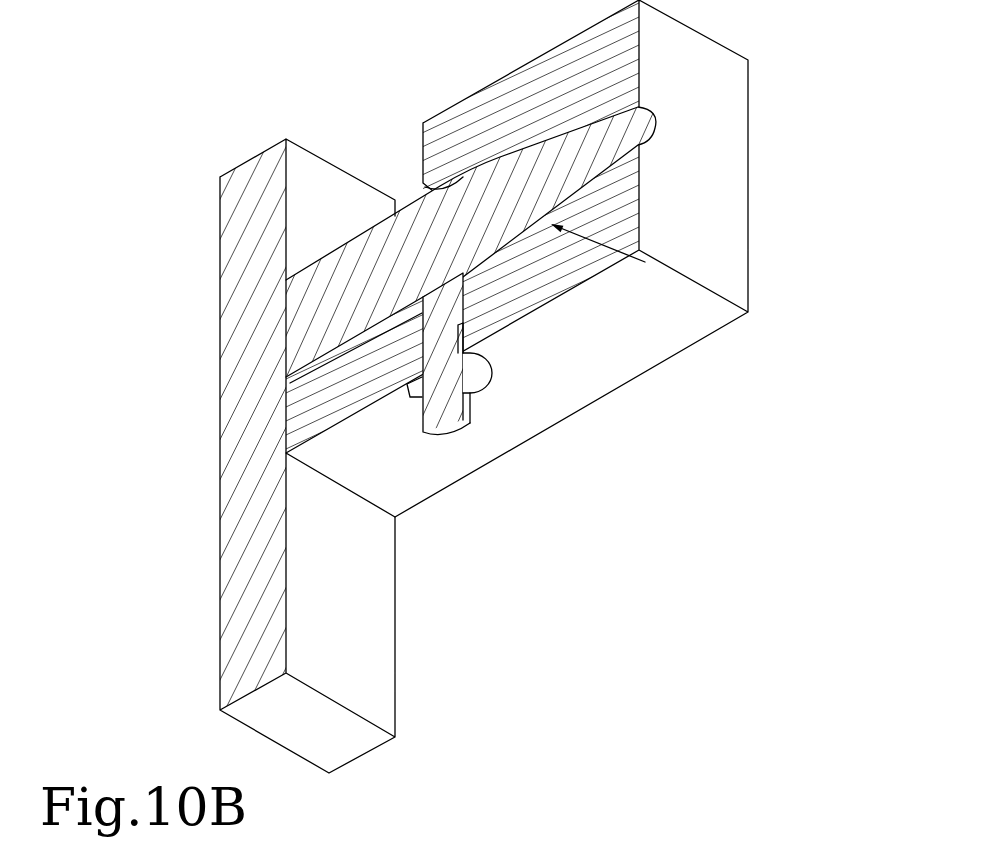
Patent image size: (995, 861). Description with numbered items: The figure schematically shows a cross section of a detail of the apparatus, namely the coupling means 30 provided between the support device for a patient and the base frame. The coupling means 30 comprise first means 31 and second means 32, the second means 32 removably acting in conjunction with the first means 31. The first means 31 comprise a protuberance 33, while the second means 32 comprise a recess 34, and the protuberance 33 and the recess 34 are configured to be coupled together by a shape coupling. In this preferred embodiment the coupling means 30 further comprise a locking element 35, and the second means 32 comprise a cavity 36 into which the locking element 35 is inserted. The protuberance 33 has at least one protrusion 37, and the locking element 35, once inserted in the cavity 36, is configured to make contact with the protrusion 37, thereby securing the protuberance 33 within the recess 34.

The coupling means 30 is at (429, 386).
The first means 31 is at (228, 568).
The second means 32 is at (727, 190).
The protuberance 33 is at (505, 177).
The recess 34 is at (645, 262).
The locking element 35 is at (440, 403).
The cavity 36 is at (488, 332).
The protrusion 37 is at (463, 176).